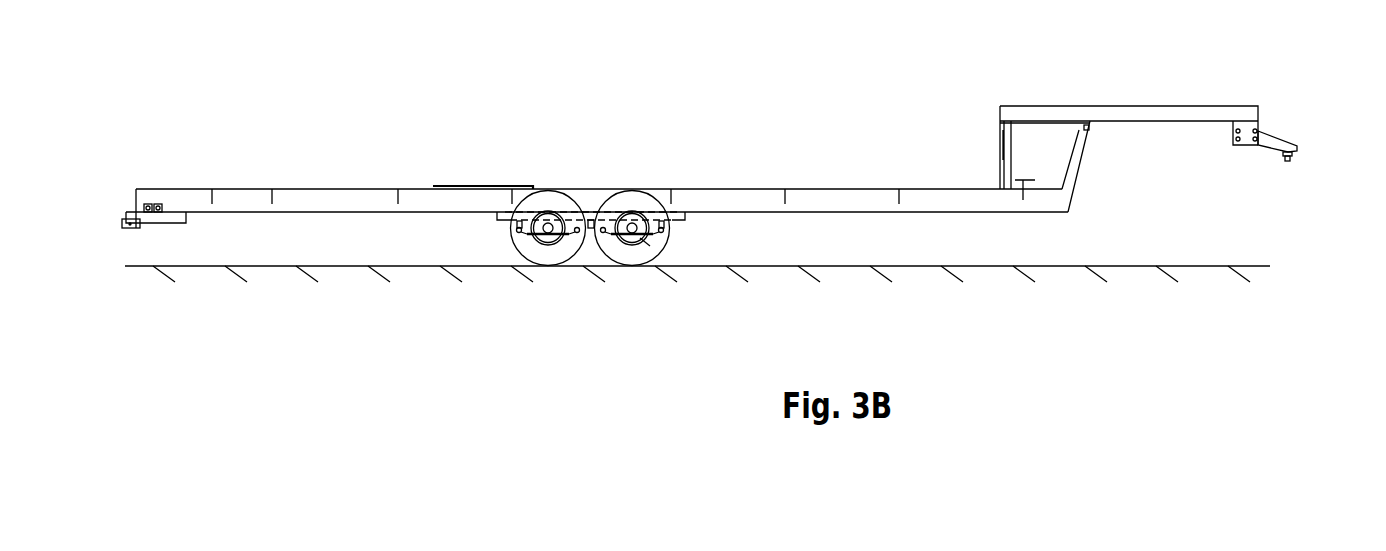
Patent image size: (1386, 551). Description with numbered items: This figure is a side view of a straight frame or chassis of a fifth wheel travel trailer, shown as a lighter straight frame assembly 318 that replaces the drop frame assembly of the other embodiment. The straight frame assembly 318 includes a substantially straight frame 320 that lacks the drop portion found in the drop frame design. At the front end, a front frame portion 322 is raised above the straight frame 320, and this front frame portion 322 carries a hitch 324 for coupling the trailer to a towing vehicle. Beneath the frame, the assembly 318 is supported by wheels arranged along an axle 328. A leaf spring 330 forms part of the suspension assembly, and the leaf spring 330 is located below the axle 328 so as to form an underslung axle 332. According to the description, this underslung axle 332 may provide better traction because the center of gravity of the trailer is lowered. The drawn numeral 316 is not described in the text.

The tandem axle assembly 316 is at (632, 262).
The straight frame assembly 318 is at (412, 108).
The straight frame 320 is at (305, 188).
The front frame portion 322 is at (1162, 121).
The hitch 324 is at (1288, 163).
The axle 328 is at (632, 224).
The leaf spring 330 is at (525, 234).
The underslung axle 332 is at (646, 248).